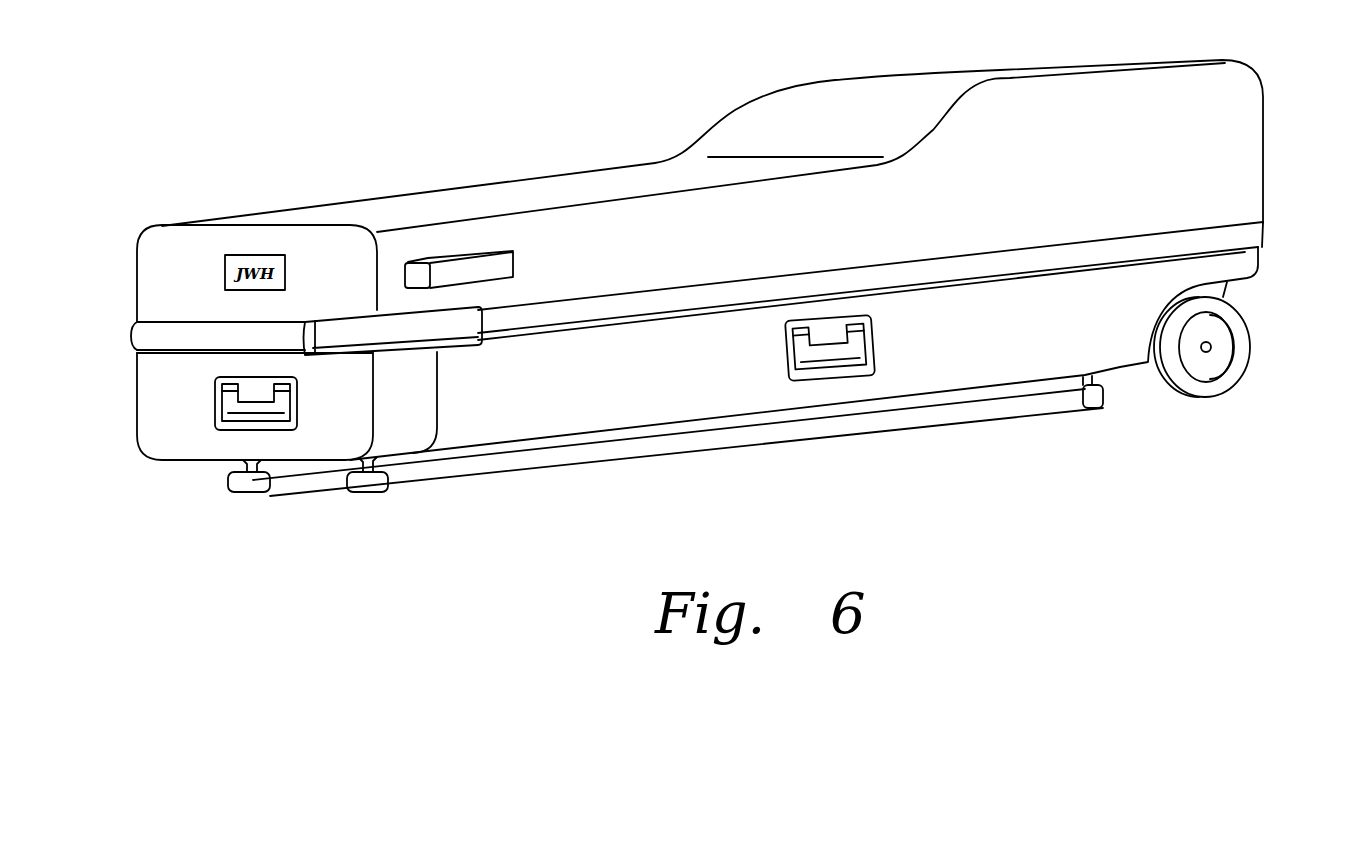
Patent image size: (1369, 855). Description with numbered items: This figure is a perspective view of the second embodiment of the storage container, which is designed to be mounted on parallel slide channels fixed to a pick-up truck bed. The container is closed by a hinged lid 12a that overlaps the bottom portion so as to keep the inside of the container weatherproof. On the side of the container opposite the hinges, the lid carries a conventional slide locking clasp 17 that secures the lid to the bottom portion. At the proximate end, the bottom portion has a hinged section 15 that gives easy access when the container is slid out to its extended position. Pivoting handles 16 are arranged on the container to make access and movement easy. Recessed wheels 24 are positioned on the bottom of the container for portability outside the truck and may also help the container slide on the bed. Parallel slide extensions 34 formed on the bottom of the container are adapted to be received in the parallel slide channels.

The hinged lid 12a is at (720, 125).
The hinged section 15 is at (138, 383).
The pivoting handles 16 is at (225, 412).
The locking clasp 17 is at (467, 347).
The recessed wheels 24 is at (1228, 383).
The parallel slide extensions 34 is at (270, 492).